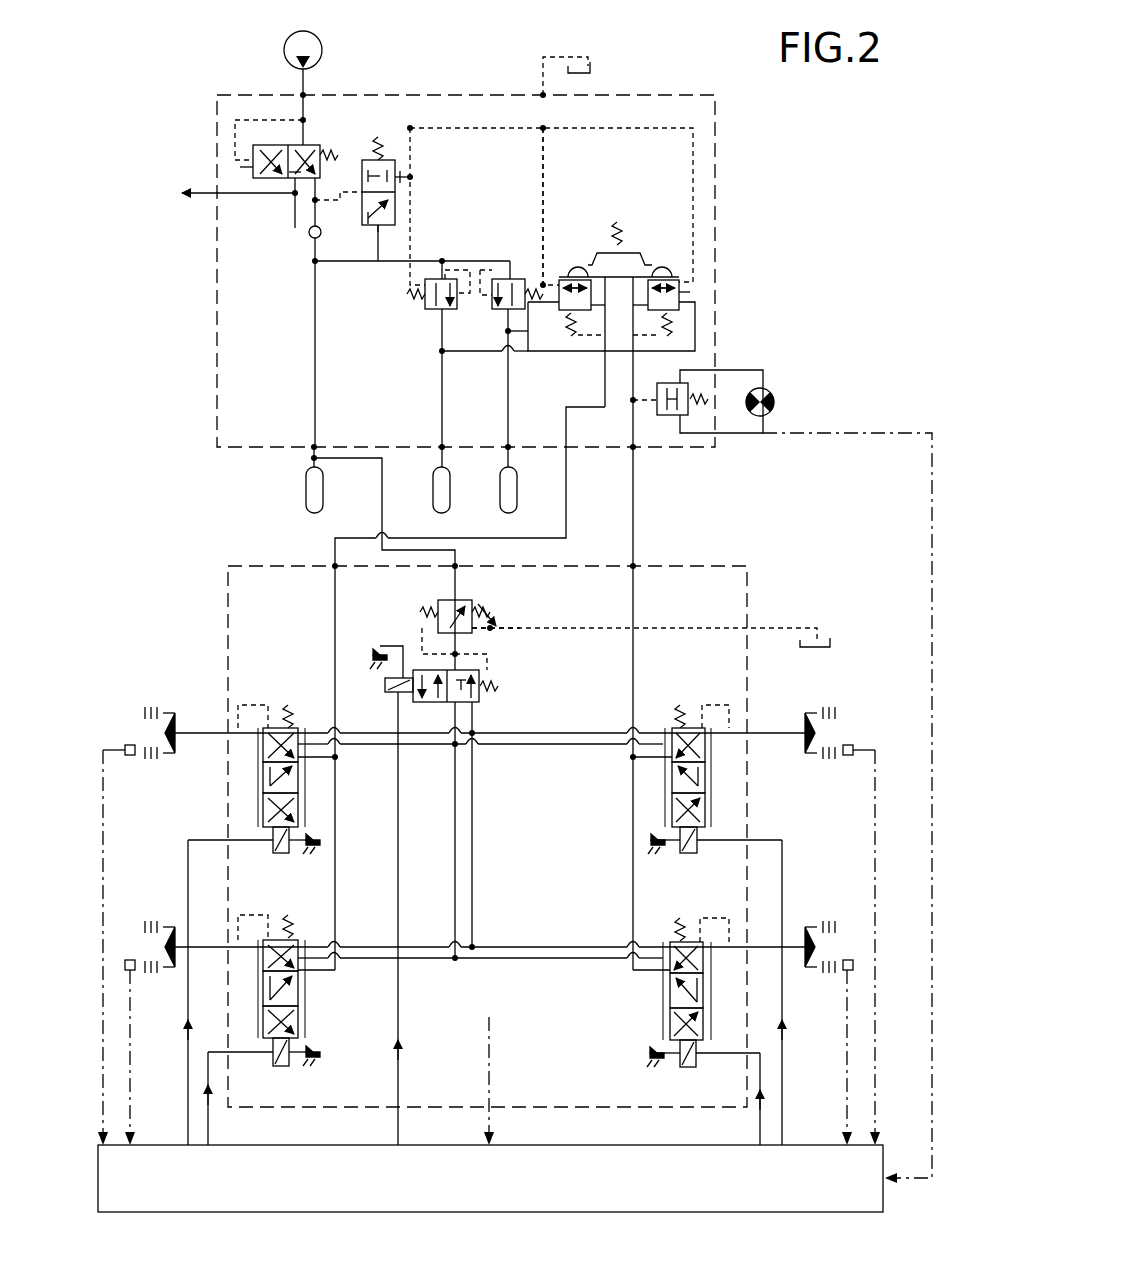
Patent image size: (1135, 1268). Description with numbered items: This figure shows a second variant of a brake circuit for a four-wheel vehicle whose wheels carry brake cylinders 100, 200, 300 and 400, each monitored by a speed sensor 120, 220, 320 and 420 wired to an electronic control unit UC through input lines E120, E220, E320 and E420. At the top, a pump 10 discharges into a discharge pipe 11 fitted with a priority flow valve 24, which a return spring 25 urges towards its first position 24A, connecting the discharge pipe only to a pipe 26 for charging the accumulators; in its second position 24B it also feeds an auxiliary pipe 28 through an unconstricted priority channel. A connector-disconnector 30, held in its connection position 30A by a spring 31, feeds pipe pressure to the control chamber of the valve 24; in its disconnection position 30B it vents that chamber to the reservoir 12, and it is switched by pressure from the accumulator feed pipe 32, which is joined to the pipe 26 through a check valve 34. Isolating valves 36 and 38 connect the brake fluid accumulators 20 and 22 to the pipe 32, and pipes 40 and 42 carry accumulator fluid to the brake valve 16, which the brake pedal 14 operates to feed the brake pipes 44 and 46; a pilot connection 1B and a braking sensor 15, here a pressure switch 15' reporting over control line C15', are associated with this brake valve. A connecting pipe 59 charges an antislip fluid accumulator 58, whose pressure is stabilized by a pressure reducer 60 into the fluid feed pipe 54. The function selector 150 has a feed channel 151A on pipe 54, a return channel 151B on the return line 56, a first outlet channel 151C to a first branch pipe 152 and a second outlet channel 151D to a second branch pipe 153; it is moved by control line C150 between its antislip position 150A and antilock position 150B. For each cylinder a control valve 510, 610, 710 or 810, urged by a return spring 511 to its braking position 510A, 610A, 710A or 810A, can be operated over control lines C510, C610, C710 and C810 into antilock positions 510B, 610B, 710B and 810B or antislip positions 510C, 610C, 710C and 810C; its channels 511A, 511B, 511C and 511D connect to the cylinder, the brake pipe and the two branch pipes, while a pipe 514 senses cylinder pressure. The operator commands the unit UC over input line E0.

The pump 10 is at (322, 42).
The discharge pipe 11 is at (306, 80).
The reservoir 12 is at (598, 70).
The brake pedal 14 is at (622, 222).
The braking sensor 15 is at (619, 300).
The braking sensor 15' is at (702, 433).
The brake valve 16 is at (690, 292).
The pilot line 1B is at (543, 275).
The brake fluid accumulator 20 is at (433, 492).
The brake fluid accumulator 22 is at (500, 492).
The priority flow valve 24 is at (304, 118).
The first position 24A is at (318, 140).
The second position 24B is at (240, 167).
The return spring 25 is at (338, 152).
The pipe 26 is at (293, 215).
The auxiliary pipe 28 is at (262, 200).
The connector-disconnector 30 is at (398, 200).
The connection position 30A is at (410, 165).
The disconnection position 30B is at (378, 232).
The spring 31 is at (376, 138).
The accumulator feed pipe 32 is at (345, 264).
The check valve 34 is at (306, 240).
The isolating valve 36 is at (432, 312).
The isolating valve 38 is at (500, 312).
The pipe 40 is at (695, 330).
The pipe 42 is at (530, 354).
The brake pipe 44 is at (633, 520).
The brake pipe 46 is at (566, 488).
The fluid feed pipe 54 is at (462, 654).
The return line 56 is at (496, 626).
The antislip fluid accumulator 58 is at (306, 492).
The connecting pipe 59 is at (315, 372).
The pressure reducer 60 is at (445, 598).
The brake cylinder 100 is at (826, 694).
The speed sensor 120 is at (850, 745).
The function selector 150 is at (454, 696).
The antislip mode position 150A is at (402, 692).
The antilock mode position 150B is at (498, 690).
The feed channel 151A is at (420, 664).
The return channel 151B is at (479, 674).
The first outlet channel 151C is at (470, 706).
The second outlet channel 151D is at (448, 706).
The first branch pipe 152 is at (472, 848).
The second branch pipe 153 is at (455, 848).
The brake cylinder 200 is at (820, 920).
The speed sensor 220 is at (845, 970).
The brake cylinder 300 is at (172, 692).
The speed sensor 320 is at (130, 755).
The brake cylinder 400 is at (172, 906).
The speed sensor 420 is at (135, 970).
The control valve 510 is at (688, 768).
The braking position 510A is at (666, 740).
The special mode position 510B is at (705, 780).
The special mode position 510C is at (705, 812).
The return spring 511 is at (684, 728).
The channel 511A is at (705, 740).
The channel 511B is at (672, 770).
The channel 511C is at (672, 740).
The channel 511D is at (672, 800).
The pipe 514 is at (729, 706).
The control valve 610 is at (680, 975).
The braking position 610A is at (703, 962).
The special mode position 610B is at (703, 995).
The special mode position 610C is at (703, 1025).
The control valve 710 is at (254, 741).
The braking position 710A is at (258, 752).
The special mode position 710B is at (258, 776).
The special mode position 710C is at (258, 802).
The control valve 810 is at (254, 957).
The braking position 810A is at (258, 968).
The special mode position 810B is at (258, 992).
The special mode position 810C is at (258, 1016).
The control line C15' is at (847, 808).
The control line C150 is at (398, 848).
The control line C510 is at (783, 862).
The control line C610 is at (758, 1130).
The control line C710 is at (186, 1106).
The control line C810 is at (210, 1128).
The input line E0 is at (489, 1070).
The input line E120 is at (875, 827).
The input line E220 is at (847, 1072).
The input line E320 is at (103, 827).
The input line E420 is at (130, 1062).
The electronic control unit UC is at (490, 1178).